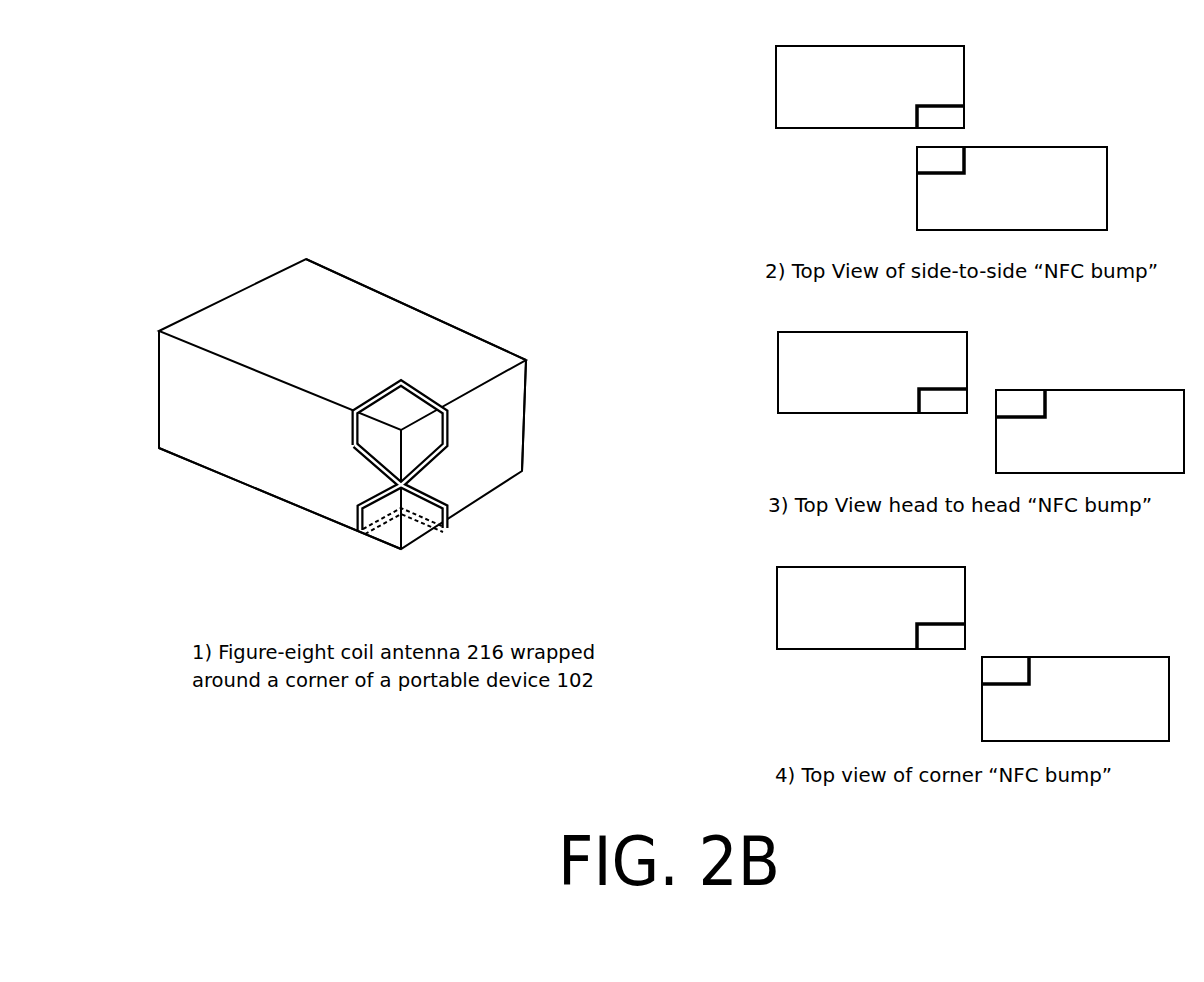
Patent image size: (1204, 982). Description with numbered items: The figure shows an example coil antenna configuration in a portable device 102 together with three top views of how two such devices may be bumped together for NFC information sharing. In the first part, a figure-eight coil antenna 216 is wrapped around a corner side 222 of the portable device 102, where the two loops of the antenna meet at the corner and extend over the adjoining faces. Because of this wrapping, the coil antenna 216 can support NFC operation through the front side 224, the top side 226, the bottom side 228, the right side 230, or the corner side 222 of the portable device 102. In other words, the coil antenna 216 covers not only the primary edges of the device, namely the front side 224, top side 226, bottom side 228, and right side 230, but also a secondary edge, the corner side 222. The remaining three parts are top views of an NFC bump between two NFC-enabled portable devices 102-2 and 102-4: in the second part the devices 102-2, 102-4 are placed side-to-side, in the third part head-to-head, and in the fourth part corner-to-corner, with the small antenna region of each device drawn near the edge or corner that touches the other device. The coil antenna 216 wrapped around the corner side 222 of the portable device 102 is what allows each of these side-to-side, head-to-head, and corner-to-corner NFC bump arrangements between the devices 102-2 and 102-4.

The portable device 102 is at (345, 276).
The portable device 102-2 is at (871, 347).
The portable device 102-4 is at (1050, 444).
The figure-eight coil antenna 216 is at (688, 365).
The corner side 222 is at (387, 543).
The front side 224 is at (448, 470).
The top side 226 is at (368, 373).
The bottom side 228 is at (417, 547).
The right side 230 is at (341, 475).